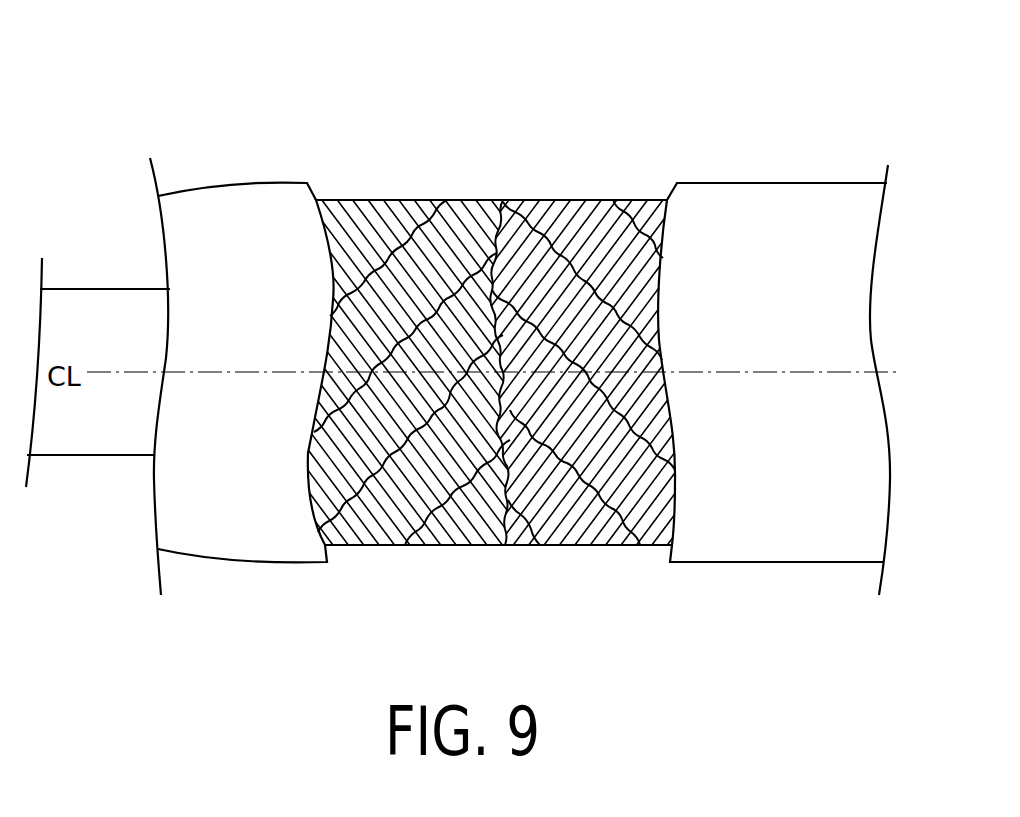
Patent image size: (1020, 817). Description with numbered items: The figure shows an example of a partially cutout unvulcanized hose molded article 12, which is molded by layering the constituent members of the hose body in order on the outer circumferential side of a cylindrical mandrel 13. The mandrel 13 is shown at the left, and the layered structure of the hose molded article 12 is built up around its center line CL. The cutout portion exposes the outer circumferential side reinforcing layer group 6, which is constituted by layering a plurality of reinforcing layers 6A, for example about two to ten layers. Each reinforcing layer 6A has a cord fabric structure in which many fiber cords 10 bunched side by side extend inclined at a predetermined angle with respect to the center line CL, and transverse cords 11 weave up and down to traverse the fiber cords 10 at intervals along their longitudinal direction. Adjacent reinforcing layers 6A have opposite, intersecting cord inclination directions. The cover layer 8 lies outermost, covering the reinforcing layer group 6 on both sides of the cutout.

The outer circumferential side reinforcing layer group 6 is at (367, 88).
The reinforcing layer 6A is at (419, 168).
The cover layer 8 is at (228, 198).
The fiber cord 10 is at (373, 513).
The transverse cord 11 is at (437, 523).
The hose molded article 12 is at (840, 152).
The mandrel 13 is at (103, 292).